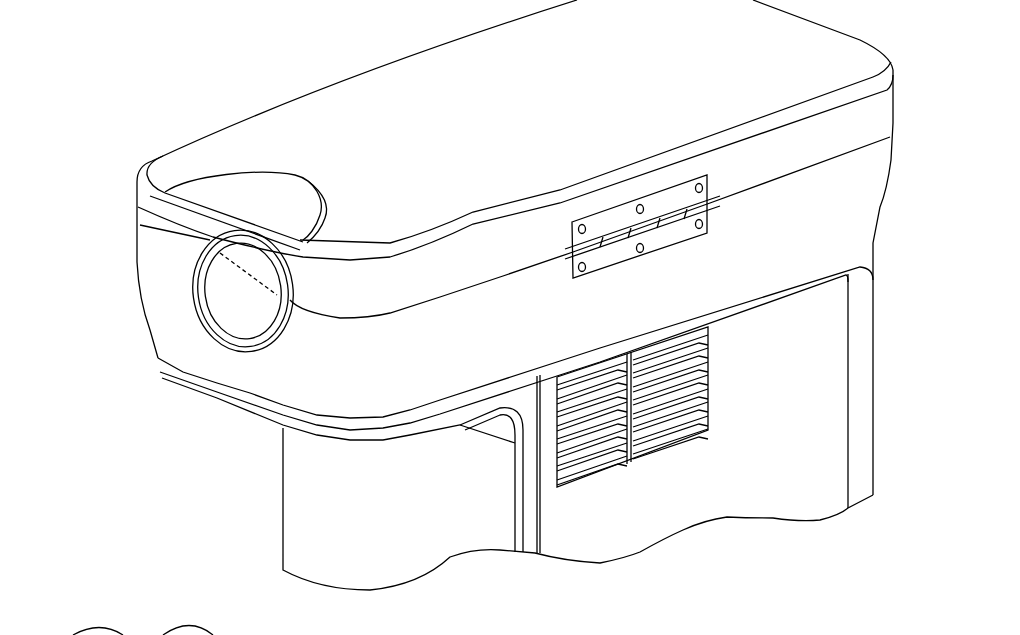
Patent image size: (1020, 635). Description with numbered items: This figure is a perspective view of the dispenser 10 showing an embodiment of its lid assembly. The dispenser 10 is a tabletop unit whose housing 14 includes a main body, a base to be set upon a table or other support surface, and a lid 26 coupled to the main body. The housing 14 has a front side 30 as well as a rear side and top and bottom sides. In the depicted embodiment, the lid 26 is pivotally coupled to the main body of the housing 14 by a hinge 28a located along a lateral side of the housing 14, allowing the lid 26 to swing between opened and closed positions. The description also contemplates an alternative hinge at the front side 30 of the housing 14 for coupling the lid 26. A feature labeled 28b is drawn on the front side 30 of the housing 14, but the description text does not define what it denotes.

The dispenser 10 is at (205, 79).
The lid 26 is at (362, 110).
The front side 30 is at (162, 264).
The round port opening 28b is at (188, 299).
The hinge 28a is at (703, 247).
The housing 14 is at (882, 364).